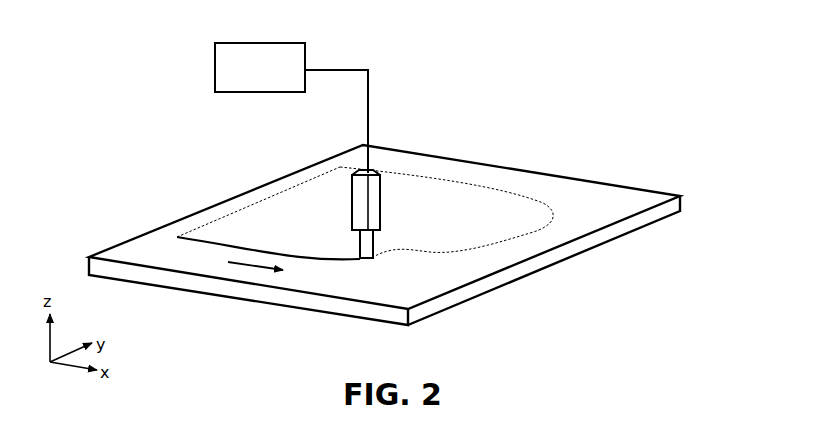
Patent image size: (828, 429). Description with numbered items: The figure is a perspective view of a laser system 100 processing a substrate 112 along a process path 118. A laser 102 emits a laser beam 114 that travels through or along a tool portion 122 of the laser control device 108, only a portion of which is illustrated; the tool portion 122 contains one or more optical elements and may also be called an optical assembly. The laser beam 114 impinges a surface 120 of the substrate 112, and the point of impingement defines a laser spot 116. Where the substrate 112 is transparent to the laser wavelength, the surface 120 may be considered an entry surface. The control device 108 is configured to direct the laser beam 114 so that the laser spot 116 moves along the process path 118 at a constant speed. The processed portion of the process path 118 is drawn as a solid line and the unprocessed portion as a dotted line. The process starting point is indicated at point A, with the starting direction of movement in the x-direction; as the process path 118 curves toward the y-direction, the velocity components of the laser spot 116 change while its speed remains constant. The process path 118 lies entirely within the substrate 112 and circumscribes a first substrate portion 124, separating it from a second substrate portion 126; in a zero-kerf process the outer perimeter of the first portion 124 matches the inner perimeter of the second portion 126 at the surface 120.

The laser system 100 is at (397, 67).
The laser 102 is at (234, 92).
The laser control device 108 is at (385, 170).
The substrate 112 is at (551, 268).
The laser beam 114 is at (358, 245).
The laser spot 116 is at (372, 259).
The process path 118 is at (467, 183).
The surface 120 is at (599, 203).
The tool portion 122 is at (356, 190).
The first substrate portion 124 is at (503, 200).
The second substrate portion 126 is at (544, 184).
The point A is at (176, 236).